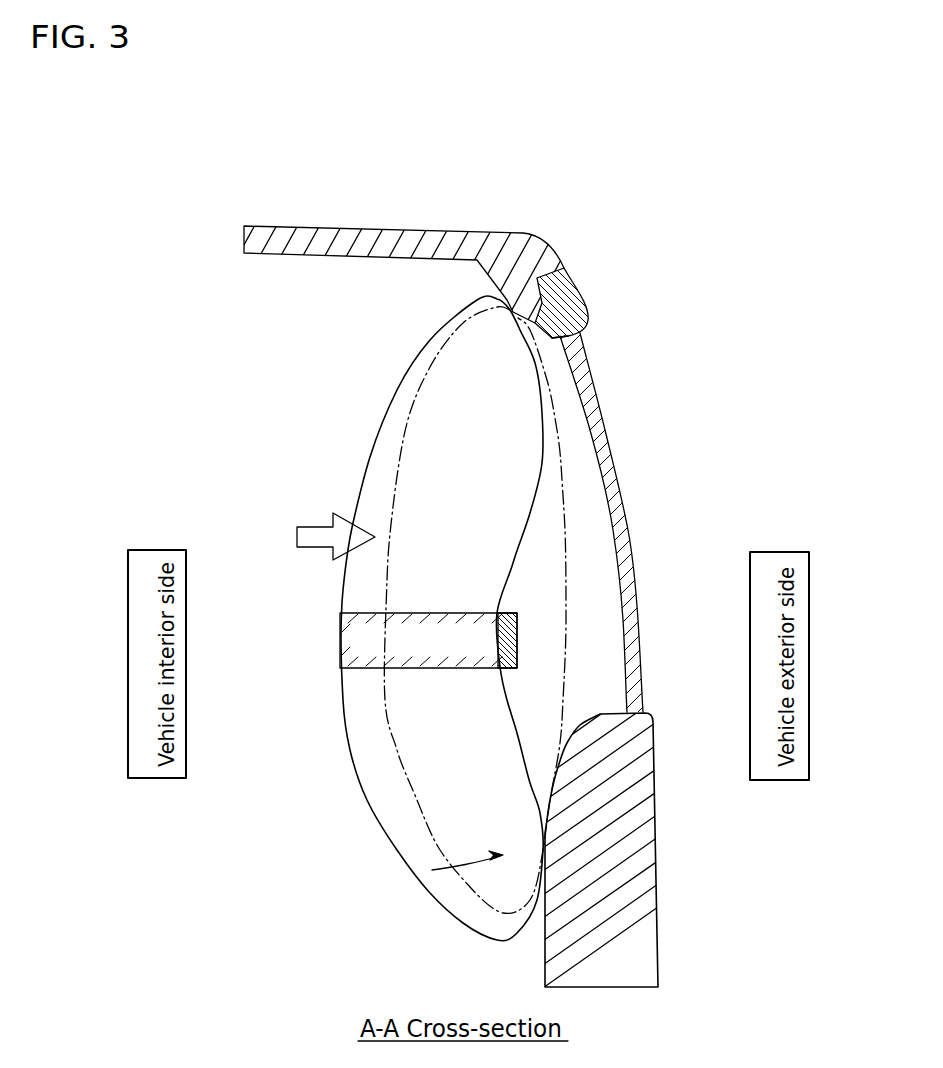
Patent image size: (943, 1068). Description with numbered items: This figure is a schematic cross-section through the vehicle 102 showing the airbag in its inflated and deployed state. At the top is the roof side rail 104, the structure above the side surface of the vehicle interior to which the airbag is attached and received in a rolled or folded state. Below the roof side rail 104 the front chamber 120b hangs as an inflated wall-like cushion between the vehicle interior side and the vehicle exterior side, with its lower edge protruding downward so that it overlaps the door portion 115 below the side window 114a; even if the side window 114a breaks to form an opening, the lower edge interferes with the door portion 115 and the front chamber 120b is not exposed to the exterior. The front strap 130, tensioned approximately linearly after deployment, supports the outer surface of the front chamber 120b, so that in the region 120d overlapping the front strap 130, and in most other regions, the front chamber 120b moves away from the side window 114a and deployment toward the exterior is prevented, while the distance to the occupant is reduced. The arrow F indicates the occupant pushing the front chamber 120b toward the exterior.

The vehicle 102 is at (547, 208).
The roof side rail 104 is at (493, 281).
The side window 114a is at (626, 522).
The door portion 115 is at (660, 846).
The front chamber 120b is at (364, 456).
The region 120d is at (400, 612).
The front strap 130 is at (520, 641).